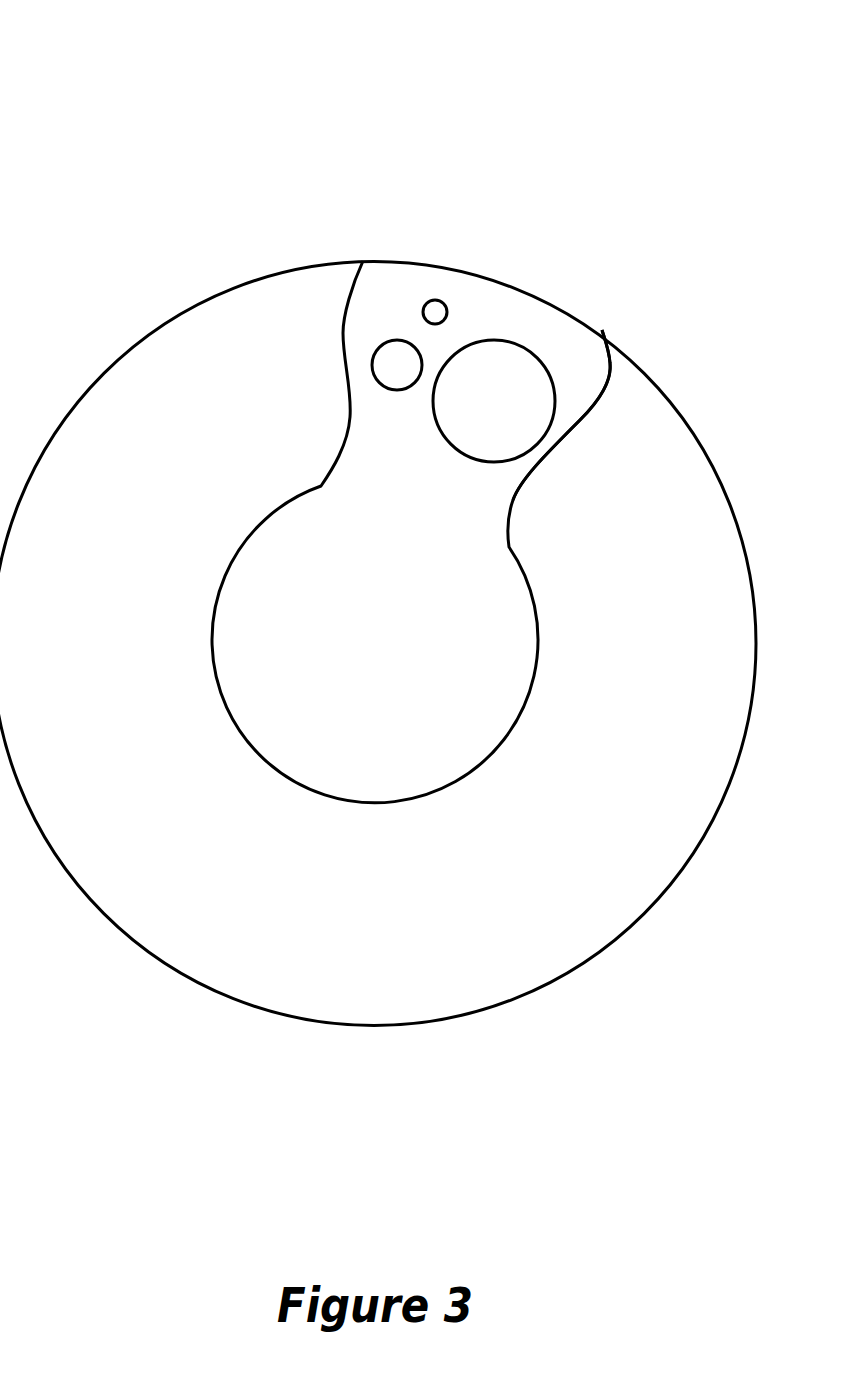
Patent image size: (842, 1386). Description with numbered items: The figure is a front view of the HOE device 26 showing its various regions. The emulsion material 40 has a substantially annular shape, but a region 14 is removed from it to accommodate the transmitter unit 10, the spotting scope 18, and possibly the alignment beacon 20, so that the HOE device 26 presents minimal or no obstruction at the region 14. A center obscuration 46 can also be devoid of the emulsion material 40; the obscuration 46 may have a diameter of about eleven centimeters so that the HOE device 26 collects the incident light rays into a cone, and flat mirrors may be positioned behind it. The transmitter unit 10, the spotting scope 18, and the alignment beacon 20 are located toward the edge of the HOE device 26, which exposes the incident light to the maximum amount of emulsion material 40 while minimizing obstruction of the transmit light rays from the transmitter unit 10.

The HOE device 26 is at (131, 88).
The emulsion material 40 is at (623, 897).
The center obscuration 46 is at (285, 725).
The region 14 is at (580, 338).
The transmitter unit 10 is at (510, 365).
The spotting scope 18 is at (391, 357).
The alignment beacon 20 is at (437, 313).